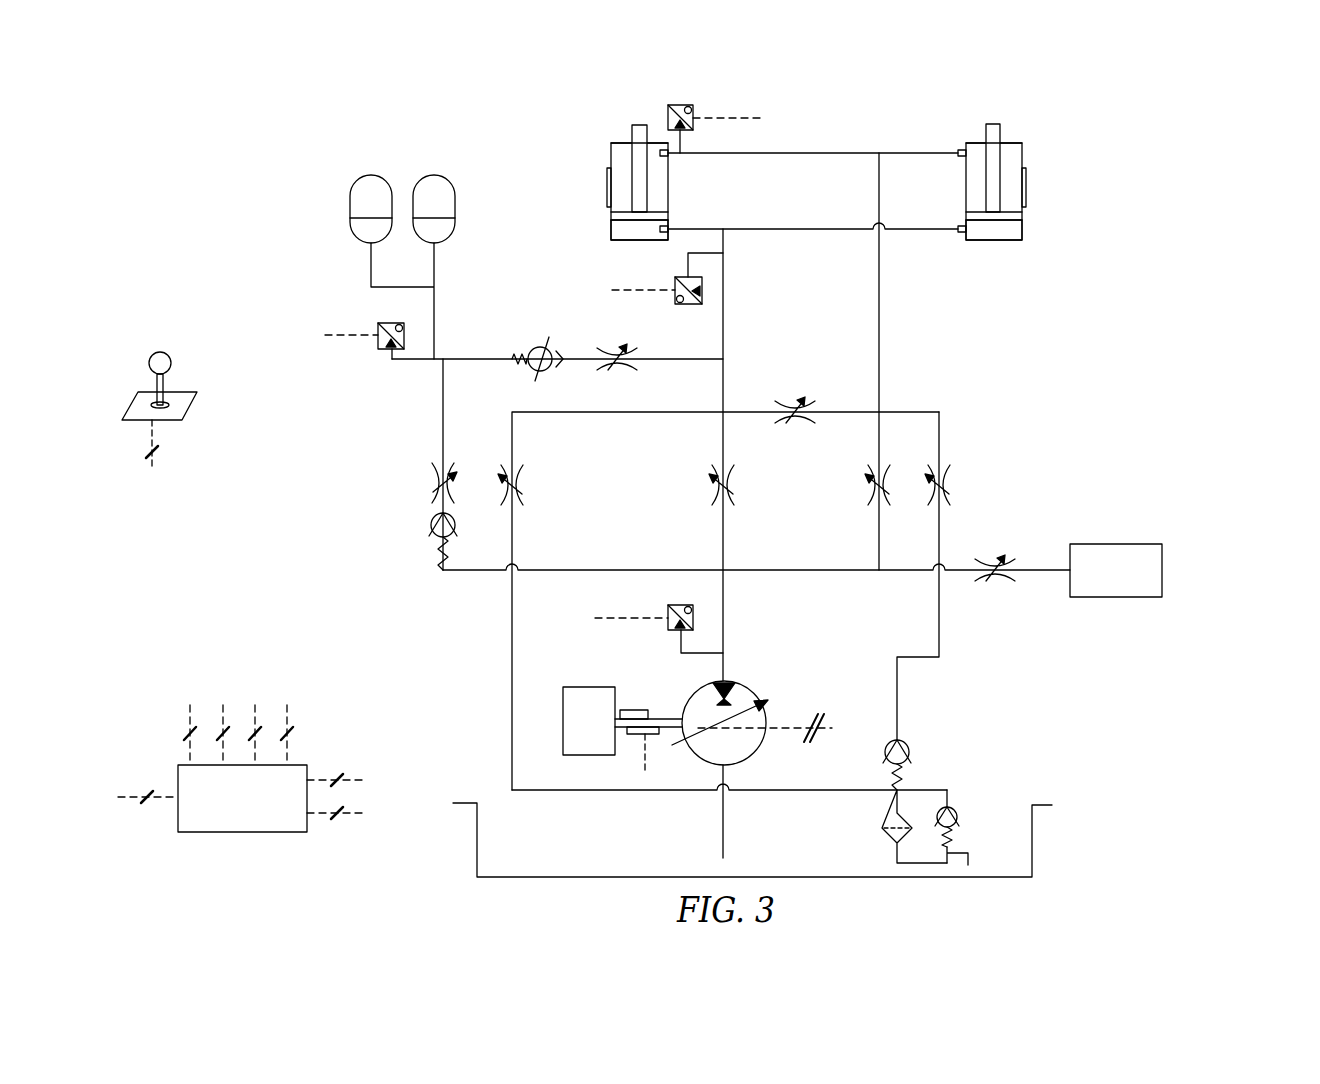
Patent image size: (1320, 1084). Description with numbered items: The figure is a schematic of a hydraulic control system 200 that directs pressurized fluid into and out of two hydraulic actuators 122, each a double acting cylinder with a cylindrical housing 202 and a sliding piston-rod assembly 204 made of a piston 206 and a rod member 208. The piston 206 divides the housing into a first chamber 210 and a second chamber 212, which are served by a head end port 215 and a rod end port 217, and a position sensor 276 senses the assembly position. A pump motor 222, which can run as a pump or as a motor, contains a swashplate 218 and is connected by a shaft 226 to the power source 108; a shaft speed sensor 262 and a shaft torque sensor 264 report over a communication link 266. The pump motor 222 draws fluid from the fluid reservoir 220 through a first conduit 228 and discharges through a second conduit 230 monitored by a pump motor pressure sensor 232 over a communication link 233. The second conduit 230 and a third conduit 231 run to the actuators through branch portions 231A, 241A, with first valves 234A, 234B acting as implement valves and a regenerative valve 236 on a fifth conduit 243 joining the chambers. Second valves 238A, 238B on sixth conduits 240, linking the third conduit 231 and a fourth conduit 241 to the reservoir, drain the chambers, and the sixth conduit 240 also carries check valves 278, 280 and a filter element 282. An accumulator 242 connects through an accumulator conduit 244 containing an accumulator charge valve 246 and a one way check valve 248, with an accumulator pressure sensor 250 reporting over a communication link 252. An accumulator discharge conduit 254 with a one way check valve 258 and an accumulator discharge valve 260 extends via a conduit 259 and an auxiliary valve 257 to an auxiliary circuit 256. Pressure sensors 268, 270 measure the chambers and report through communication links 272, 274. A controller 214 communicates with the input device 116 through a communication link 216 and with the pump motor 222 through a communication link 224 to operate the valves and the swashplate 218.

The hydraulic control system 200 is at (1224, 113).
The hydraulic actuator 122 is at (819, 169).
The cylindrical housing 202 is at (617, 148).
The piston-rod assembly 204 is at (605, 148).
The piston 206 is at (625, 232).
The rod member 208 is at (640, 124).
The first chamber 210 is at (640, 233).
The second chamber 212 is at (655, 190).
The head end port 215 is at (675, 229).
The rod end port 217 is at (675, 156).
The position sensor 276 is at (607, 186).
The branch portion 241A is at (812, 152).
The branch portion 231A is at (790, 232).
The fifth conduit 243 is at (878, 410).
The second conduit 230 is at (710, 476).
The pressure sensor 270 is at (700, 120).
The communication link 274 is at (735, 116).
The pressure sensor 268 is at (678, 286).
The communication link 272 is at (612, 291).
The accumulator 242 is at (370, 161).
The accumulator pressure sensor 250 is at (380, 322).
The communication link 252 is at (330, 338).
The accumulator conduit 244 is at (692, 358).
The one way check valve 248 is at (548, 375).
The accumulator charge valve 246 is at (630, 371).
The accumulator discharge conduit 254 is at (441, 420).
The accumulator discharge valve 260 is at (441, 478).
The one way check valve 258 is at (431, 531).
The sixth conduit 240 is at (510, 445).
The second valve 238A is at (520, 480).
The second valve 238B is at (948, 478).
The regenerative valve 236 is at (795, 405).
The first valve 234A is at (731, 492).
The first valve 234B is at (870, 498).
The third conduit 231 is at (878, 532).
The fourth conduit 241 is at (946, 540).
The conduit 259 is at (1052, 568).
The auxiliary valve 257 is at (1000, 585).
The auxiliary circuit 256 is at (1122, 544).
The pump motor pressure sensor 232 is at (666, 612).
The communication link 233 is at (600, 618).
The power source 108 is at (585, 687).
The shaft 226 is at (660, 718).
The shaft torque sensor 264 is at (634, 710).
The shaft speed sensor 262 is at (630, 736).
The communication link 266 is at (645, 772).
The swashplate 218 is at (745, 761).
The pump motor 222 is at (750, 688).
The communication link 224 is at (795, 726).
The first conduit 228 is at (727, 804).
The check valve 278 is at (900, 740).
The filter element 282 is at (882, 828).
The check valve 280 is at (950, 806).
The fluid reservoir 220 is at (1035, 805).
The input device 116 is at (168, 354).
The communication link 216 is at (157, 466).
The controller 214 is at (356, 694).